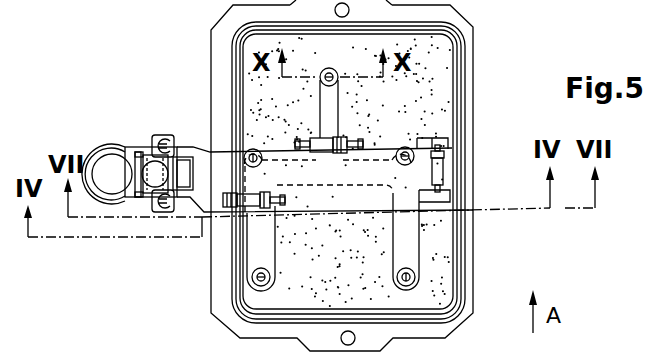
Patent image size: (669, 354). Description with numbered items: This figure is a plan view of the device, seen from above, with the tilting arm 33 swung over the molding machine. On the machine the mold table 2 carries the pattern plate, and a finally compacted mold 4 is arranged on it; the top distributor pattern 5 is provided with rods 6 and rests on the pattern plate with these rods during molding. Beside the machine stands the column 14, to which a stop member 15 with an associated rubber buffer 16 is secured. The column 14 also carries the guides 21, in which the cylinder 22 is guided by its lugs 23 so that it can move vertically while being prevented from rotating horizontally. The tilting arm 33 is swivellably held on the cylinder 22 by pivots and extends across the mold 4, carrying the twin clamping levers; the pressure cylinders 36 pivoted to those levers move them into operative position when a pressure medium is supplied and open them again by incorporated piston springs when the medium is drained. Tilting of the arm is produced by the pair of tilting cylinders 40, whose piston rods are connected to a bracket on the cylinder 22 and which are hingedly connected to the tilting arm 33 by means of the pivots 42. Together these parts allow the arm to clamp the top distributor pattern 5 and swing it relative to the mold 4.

The mold table 2 is at (471, 117).
The finally compacted mold 4 is at (430, 84).
The top distributor pattern 5 is at (407, 230).
The rods 6 is at (338, 69).
The column 14 is at (107, 175).
The stop member 15 is at (150, 150).
The rubber buffer 16 is at (176, 152).
The guides 21 is at (128, 149).
The cylinder 22 is at (153, 178).
The lugs 23 is at (137, 202).
The tilting arm 33 is at (367, 186).
The pressure cylinders 36 is at (310, 139).
The tilting cylinders 40 is at (168, 135).
The pivots 42 is at (171, 140).